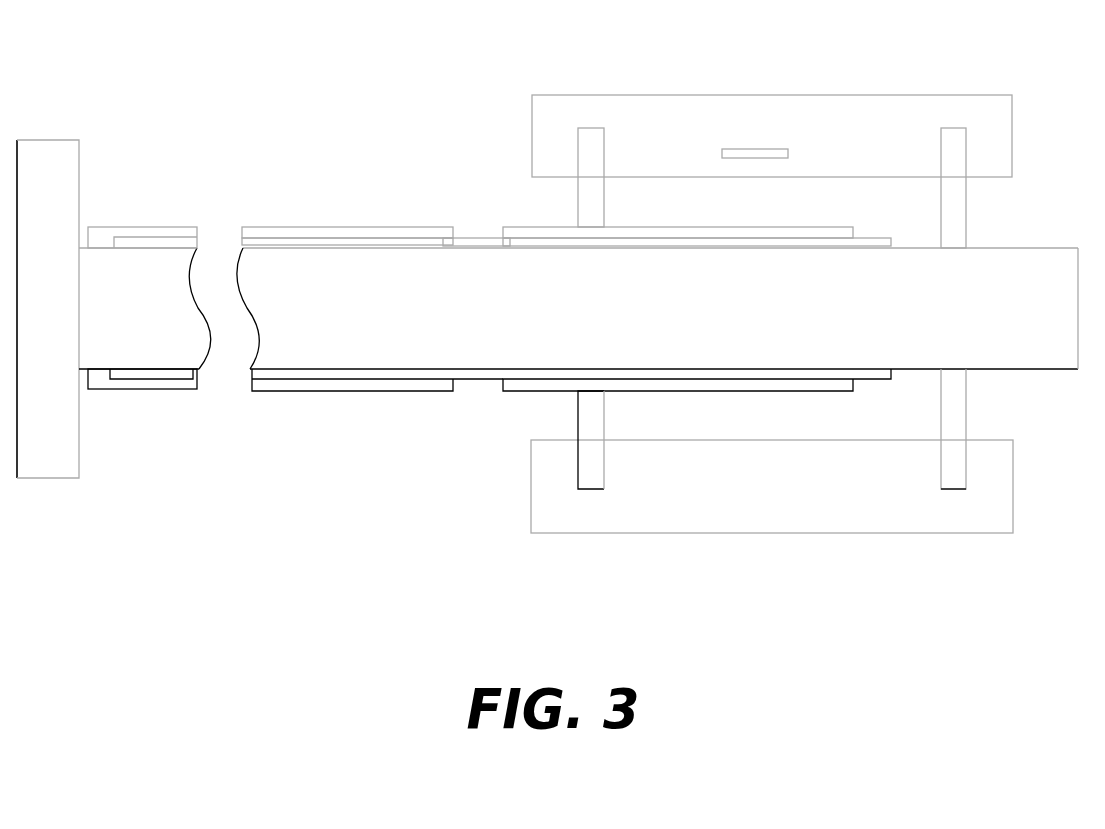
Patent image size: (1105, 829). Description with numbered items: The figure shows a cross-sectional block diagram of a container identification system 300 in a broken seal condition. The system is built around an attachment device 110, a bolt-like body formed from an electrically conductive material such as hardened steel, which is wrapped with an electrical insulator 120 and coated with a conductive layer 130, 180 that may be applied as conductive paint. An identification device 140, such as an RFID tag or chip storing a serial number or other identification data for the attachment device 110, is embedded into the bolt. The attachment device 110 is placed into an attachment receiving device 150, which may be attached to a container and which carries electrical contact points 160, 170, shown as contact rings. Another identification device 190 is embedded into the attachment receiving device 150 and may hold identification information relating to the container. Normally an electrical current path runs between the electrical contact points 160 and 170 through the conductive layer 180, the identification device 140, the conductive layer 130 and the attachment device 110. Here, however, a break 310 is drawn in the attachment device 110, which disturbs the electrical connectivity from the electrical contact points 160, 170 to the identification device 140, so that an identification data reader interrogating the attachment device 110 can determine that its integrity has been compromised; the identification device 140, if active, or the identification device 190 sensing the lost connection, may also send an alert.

The container identification system 300 is at (42, 38).
The attachment device 110 is at (1007, 248).
The electrical insulator 120 is at (372, 237).
The conductive layer 130 is at (108, 227).
The identification device 140 is at (465, 237).
The attachment receiving device 150 is at (692, 95).
The electrical contact point 160 is at (591, 128).
The electrical contact point 170 is at (953, 128).
The conductive layer 180 is at (818, 227).
The identification device 190 is at (755, 149).
The break 310 is at (218, 222).